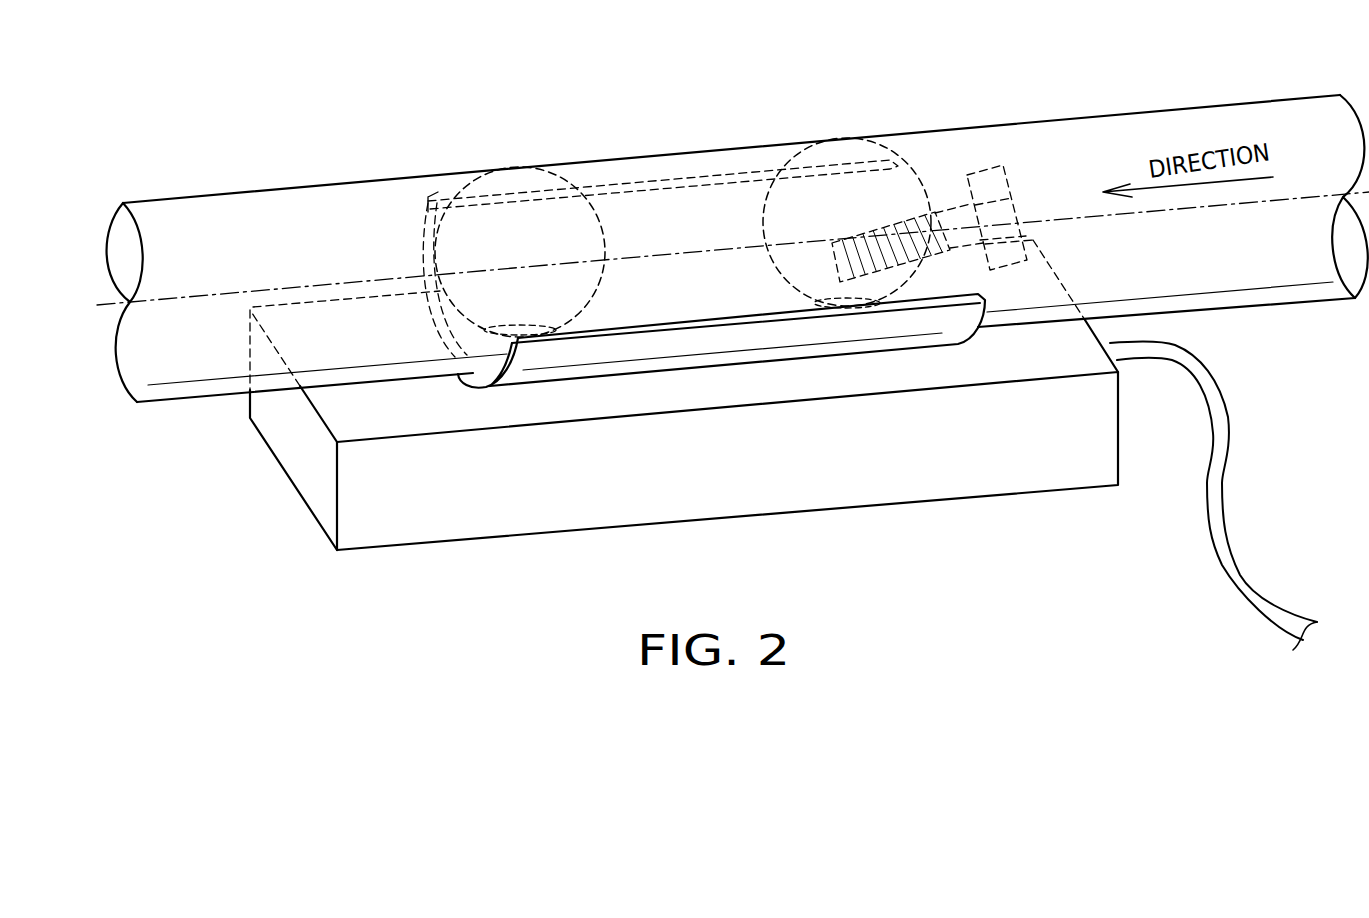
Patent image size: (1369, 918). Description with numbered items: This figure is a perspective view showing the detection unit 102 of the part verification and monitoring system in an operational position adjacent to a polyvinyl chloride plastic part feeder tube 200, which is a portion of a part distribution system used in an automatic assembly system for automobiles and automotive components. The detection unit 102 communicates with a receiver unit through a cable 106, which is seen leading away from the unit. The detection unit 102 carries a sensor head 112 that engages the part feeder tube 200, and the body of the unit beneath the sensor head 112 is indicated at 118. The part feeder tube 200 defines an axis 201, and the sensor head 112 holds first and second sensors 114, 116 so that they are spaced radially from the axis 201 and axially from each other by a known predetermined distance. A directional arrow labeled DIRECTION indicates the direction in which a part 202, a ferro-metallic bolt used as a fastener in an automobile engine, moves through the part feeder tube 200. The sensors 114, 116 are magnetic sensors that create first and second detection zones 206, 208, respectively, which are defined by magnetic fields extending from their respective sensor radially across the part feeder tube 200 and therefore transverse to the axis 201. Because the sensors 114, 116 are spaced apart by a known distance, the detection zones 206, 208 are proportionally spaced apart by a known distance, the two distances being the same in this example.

The detection unit 102 is at (402, 547).
The cable 106 is at (1233, 411).
The sensor head 112 is at (685, 373).
The first sensor 114 is at (845, 307).
The second sensor 116 is at (502, 335).
The housing block 118 is at (290, 485).
The part feeder tube 200 is at (353, 183).
The axis 201 is at (173, 300).
The part 202 is at (990, 165).
The first detection zone 206 is at (895, 254).
The second detection zone 208 is at (597, 213).